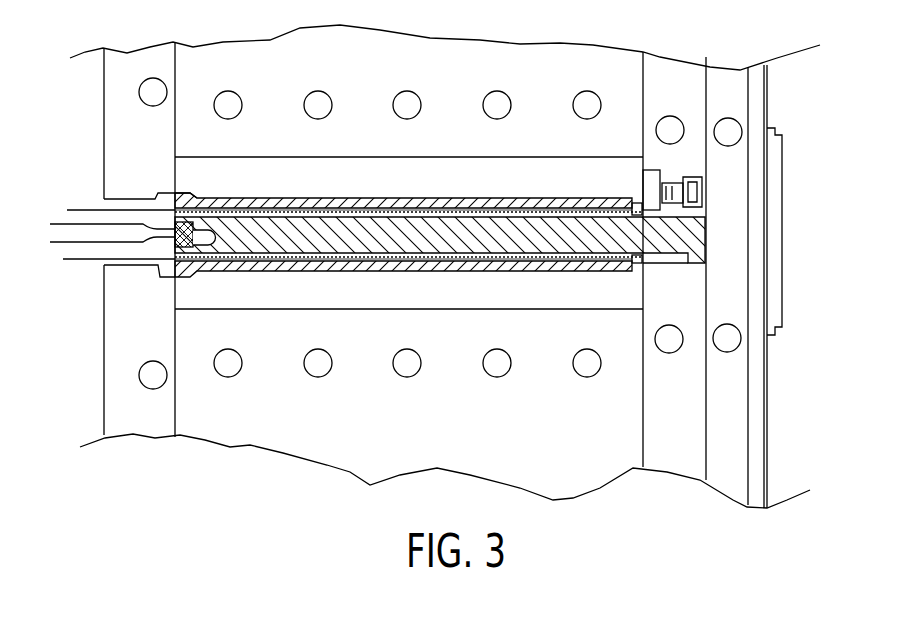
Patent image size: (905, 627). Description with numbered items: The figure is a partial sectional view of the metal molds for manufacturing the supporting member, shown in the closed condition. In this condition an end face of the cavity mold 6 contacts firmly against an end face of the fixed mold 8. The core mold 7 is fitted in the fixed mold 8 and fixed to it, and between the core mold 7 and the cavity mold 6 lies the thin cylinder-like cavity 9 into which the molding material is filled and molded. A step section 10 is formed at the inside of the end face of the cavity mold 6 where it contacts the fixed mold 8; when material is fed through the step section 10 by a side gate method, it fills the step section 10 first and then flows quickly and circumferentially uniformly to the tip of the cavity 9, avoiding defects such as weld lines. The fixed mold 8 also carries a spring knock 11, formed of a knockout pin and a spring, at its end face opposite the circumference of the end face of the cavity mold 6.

The cavity mold 6 is at (230, 265).
The core mold 7 is at (308, 238).
The fixed mold 8 is at (728, 463).
The cavity 9 is at (402, 253).
The step section 10 is at (642, 257).
The spring knock 11 is at (686, 187).